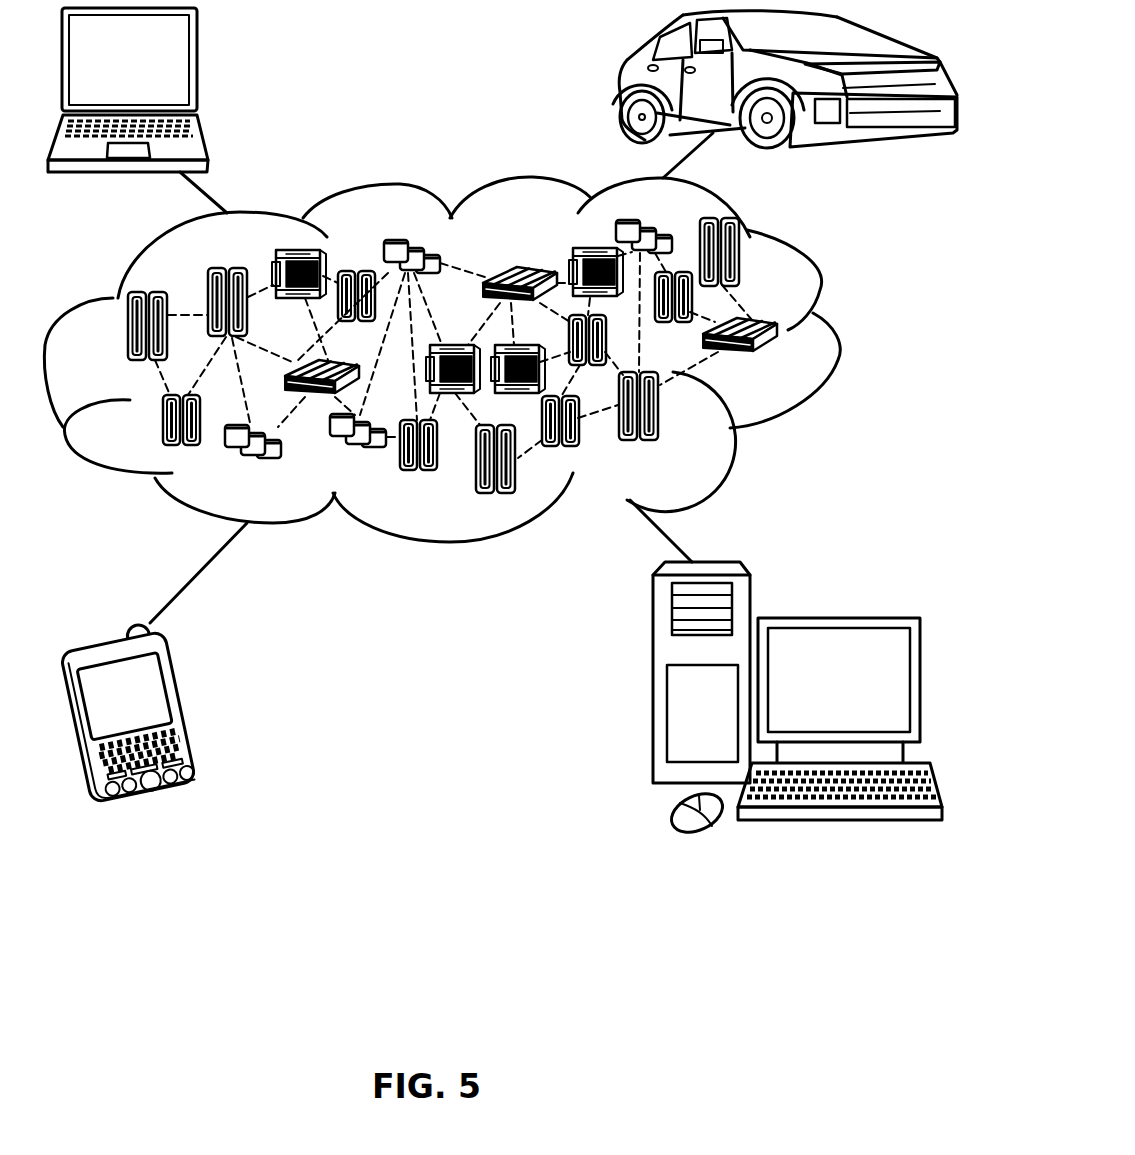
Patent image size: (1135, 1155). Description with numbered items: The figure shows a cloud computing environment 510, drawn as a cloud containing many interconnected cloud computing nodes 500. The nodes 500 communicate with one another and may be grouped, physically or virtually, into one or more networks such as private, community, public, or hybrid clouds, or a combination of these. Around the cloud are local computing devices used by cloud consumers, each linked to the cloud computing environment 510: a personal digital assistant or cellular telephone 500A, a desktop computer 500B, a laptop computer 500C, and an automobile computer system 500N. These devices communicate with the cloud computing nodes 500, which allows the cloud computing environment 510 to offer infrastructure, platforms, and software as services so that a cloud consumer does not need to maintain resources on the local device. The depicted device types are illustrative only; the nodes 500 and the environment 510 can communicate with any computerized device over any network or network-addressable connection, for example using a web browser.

The cloud computing nodes 500 is at (476, 359).
The cloud computing environment 510 is at (835, 337).
The personal digital assistant (PDA) or cellular telephone 500A is at (187, 708).
The desktop computer 500B is at (835, 617).
The laptop computer 500C is at (197, 70).
The automobile computer system 500N is at (623, 87).